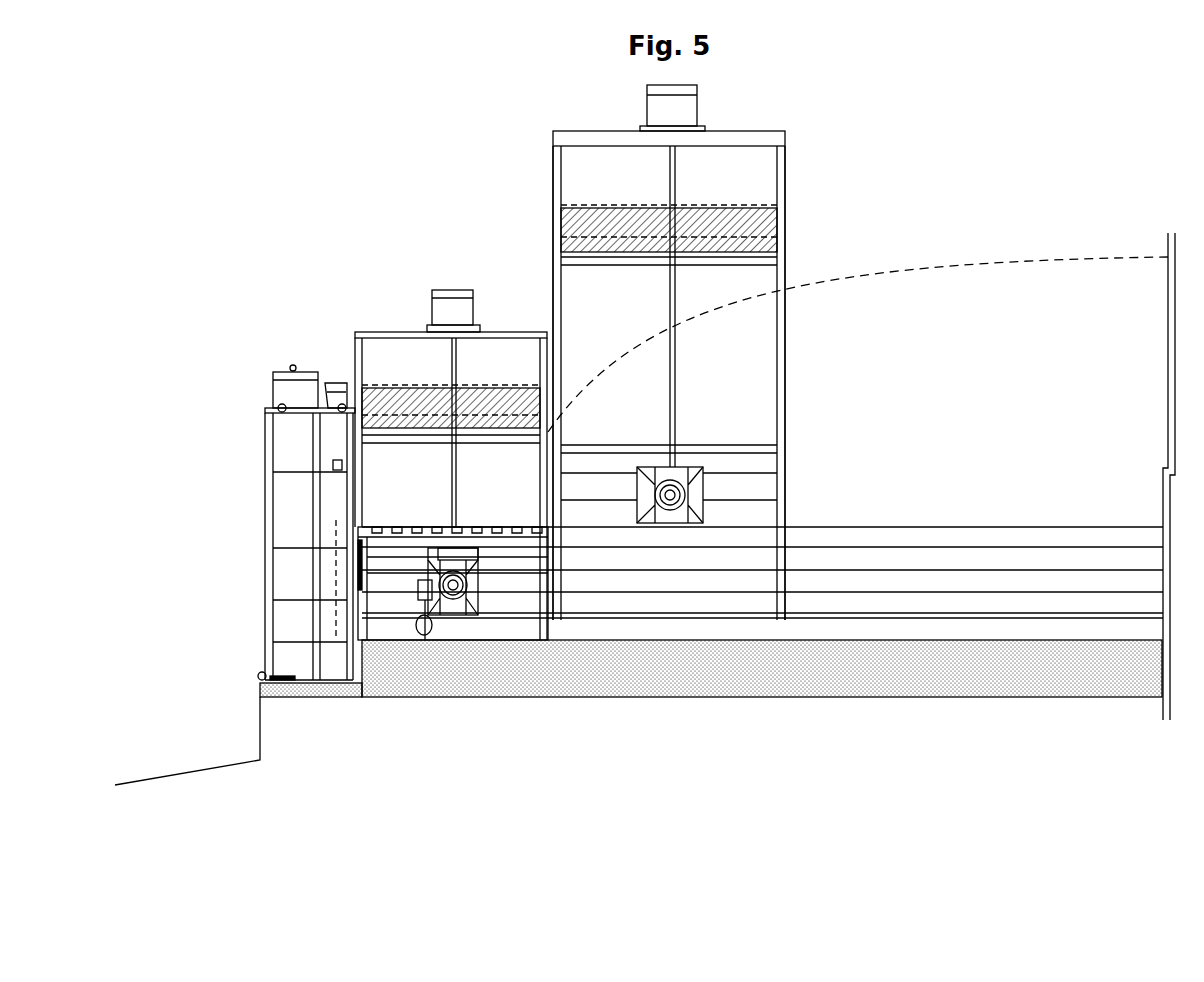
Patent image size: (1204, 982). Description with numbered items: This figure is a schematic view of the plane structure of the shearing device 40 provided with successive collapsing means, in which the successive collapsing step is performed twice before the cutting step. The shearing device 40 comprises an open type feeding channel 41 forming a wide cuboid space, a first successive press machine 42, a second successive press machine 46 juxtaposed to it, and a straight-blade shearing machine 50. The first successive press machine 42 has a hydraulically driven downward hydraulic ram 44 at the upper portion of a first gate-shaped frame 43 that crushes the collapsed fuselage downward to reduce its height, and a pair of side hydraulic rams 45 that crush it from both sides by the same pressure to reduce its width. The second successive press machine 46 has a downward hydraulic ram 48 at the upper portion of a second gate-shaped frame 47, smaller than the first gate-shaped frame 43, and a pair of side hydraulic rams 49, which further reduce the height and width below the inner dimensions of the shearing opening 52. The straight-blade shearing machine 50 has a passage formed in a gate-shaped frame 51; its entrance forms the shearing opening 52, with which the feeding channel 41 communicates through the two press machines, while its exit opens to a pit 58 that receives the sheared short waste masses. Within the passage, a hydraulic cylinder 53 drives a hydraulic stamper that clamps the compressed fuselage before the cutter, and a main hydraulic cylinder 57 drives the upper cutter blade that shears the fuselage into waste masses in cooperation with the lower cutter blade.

The shearing device 40 is at (1034, 500).
The feeding channel 41 is at (905, 527).
The first successive press machine 42 is at (680, 413).
The first gate-shaped frame 43 is at (762, 338).
The downward hydraulic ram 44 is at (735, 220).
The side hydraulic rams 45 is at (703, 505).
The second successive press machine 46 is at (451, 420).
The second gate-shaped frame 47 is at (501, 622).
The downward hydraulic ram 48 is at (502, 385).
The side hydraulic rams 49 is at (488, 614).
The straight-blade shearing machine 50 is at (332, 591).
The gate-shaped frame 51 is at (302, 587).
The shearing opening 52 is at (368, 590).
The hydraulic cylinder 53 is at (330, 383).
The main hydraulic cylinder 57 is at (292, 366).
The pit 58 is at (238, 734).